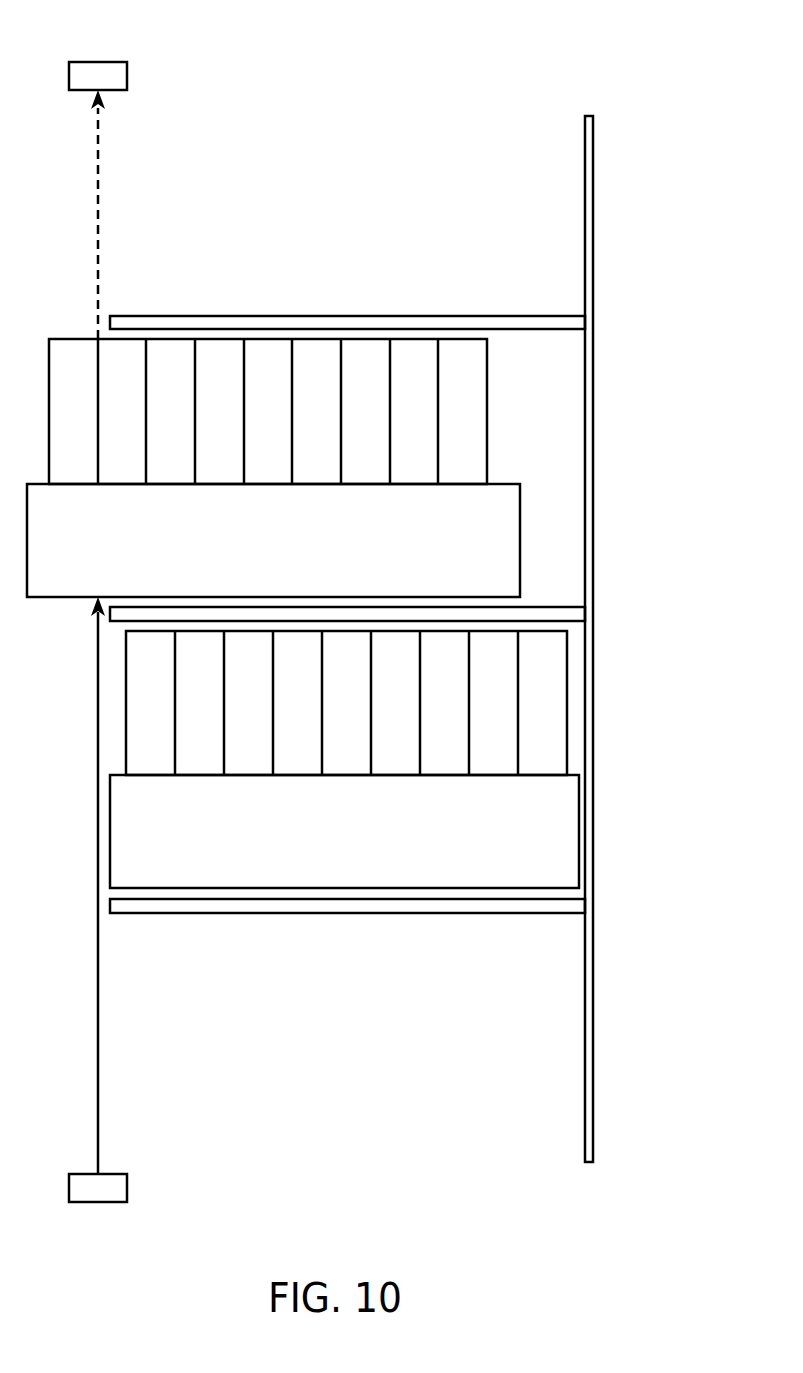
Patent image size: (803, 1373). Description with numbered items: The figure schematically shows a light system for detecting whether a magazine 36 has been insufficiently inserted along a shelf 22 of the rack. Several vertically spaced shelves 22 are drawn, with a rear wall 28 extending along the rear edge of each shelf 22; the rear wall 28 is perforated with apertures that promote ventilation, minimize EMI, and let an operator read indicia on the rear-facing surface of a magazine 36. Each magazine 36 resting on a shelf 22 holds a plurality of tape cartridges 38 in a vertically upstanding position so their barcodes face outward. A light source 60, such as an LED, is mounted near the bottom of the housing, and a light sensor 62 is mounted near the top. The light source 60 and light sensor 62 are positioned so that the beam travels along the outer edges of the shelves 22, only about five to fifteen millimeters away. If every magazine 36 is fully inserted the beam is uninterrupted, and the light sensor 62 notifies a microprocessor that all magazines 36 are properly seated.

The shelf 22 is at (402, 315).
The rear wall 28 is at (593, 424).
The magazine 36 is at (259, 559).
The tape cartridge 38 is at (477, 431).
The light source 60 is at (98, 1202).
The light sensor 62 is at (98, 62).